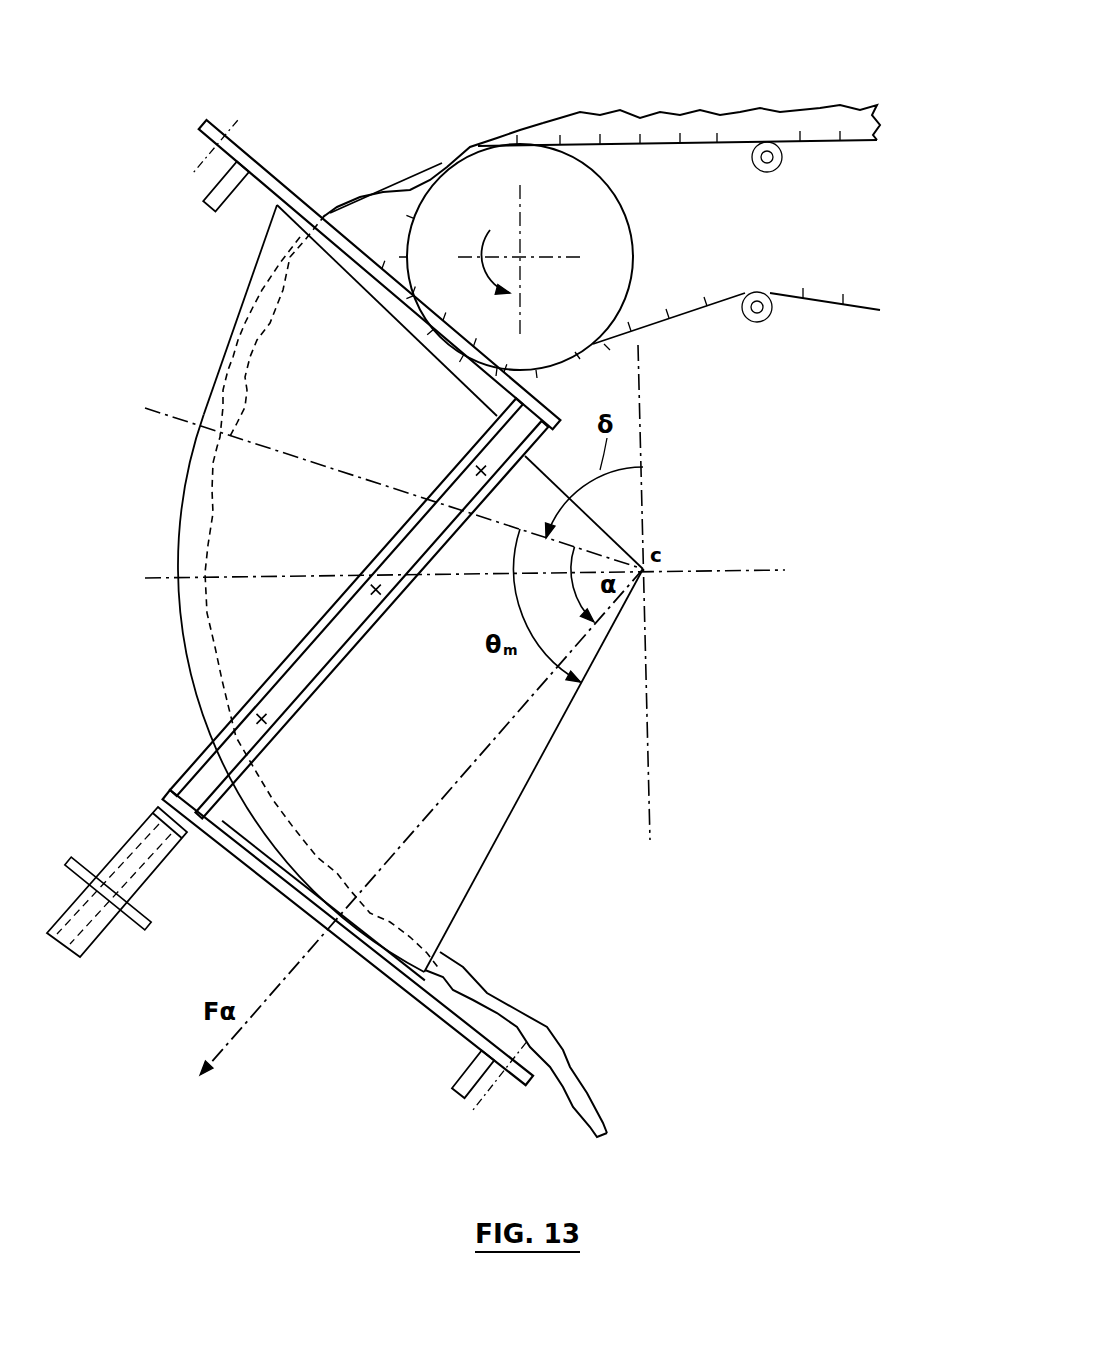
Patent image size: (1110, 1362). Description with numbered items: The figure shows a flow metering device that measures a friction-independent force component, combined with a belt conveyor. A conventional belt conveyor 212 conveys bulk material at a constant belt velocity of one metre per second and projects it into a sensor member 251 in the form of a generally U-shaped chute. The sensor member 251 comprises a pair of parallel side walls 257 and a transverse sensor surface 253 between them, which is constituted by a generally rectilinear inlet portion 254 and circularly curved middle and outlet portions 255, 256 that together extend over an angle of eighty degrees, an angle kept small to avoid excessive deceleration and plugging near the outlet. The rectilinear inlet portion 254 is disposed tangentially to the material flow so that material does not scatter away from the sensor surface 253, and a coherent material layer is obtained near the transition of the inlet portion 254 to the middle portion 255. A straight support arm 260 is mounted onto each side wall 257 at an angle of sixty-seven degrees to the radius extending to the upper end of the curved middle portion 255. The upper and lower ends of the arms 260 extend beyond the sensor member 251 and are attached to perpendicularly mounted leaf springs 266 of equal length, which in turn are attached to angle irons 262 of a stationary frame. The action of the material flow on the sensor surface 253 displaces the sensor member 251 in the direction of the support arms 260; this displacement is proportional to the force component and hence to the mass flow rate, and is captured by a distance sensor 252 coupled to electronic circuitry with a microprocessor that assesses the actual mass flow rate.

The belt conveyor 212 is at (752, 74).
The sensor member 251 is at (497, 818).
The distance sensor 252 is at (90, 945).
The sensor surface 253 is at (192, 524).
The inlet portion 254 is at (260, 252).
The middle portion 255 is at (186, 667).
The outlet portion 256 is at (397, 977).
The side wall 257 is at (413, 752).
The support arm 260 is at (353, 624).
The angle iron 262 is at (208, 203).
The leaf spring 266 is at (263, 164).